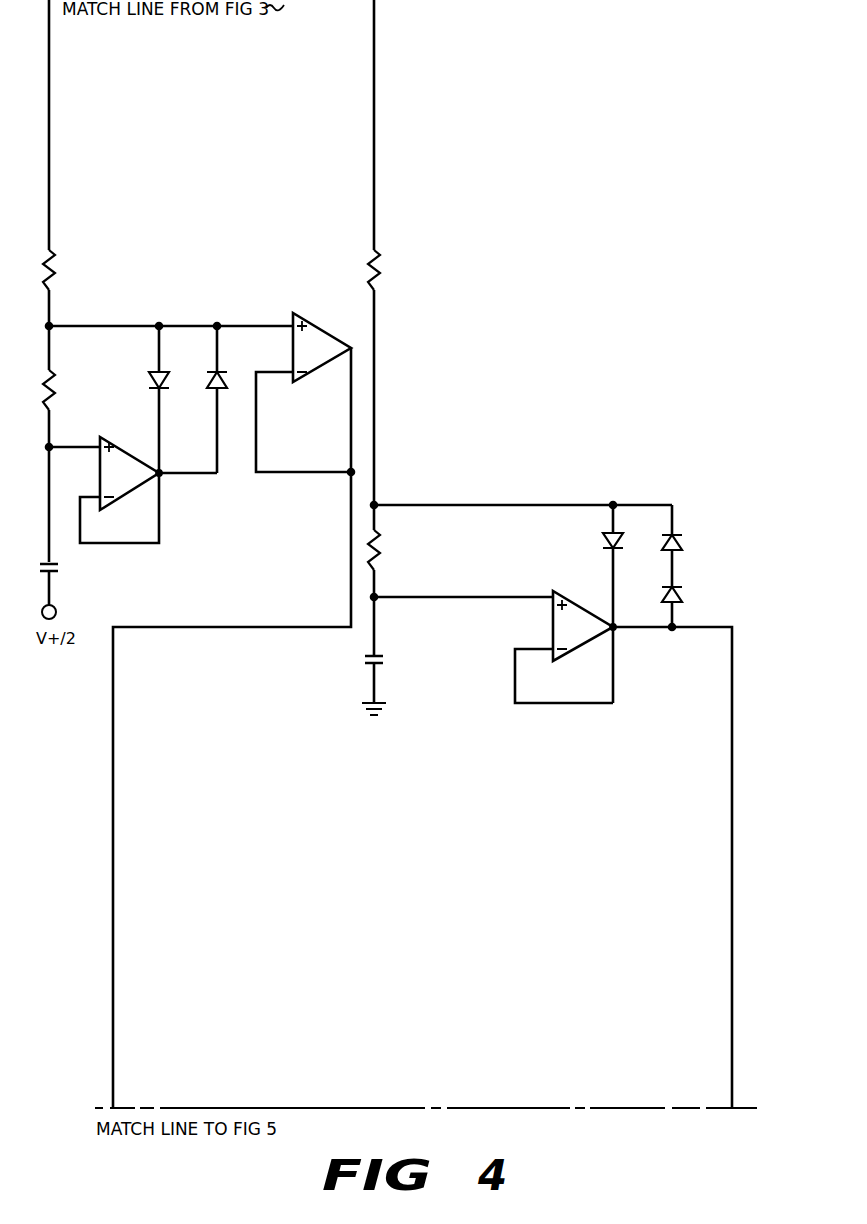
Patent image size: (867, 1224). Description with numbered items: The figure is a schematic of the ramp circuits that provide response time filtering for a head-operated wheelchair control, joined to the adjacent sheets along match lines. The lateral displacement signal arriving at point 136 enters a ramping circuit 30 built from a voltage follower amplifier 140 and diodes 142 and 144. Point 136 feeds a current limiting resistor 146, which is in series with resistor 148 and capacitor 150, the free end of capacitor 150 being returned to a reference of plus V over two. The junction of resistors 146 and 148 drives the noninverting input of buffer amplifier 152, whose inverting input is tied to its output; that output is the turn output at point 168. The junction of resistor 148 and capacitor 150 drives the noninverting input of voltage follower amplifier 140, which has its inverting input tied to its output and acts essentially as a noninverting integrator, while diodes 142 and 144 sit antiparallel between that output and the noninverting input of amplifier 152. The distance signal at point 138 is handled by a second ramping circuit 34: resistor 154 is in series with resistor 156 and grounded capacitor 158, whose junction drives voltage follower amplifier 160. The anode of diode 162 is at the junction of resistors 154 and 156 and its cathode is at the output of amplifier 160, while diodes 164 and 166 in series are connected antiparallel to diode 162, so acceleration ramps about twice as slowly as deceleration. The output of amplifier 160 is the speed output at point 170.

The ramping circuit 30 is at (267, 284).
The ramping circuit 34 is at (630, 492).
The point 136 is at (49, 197).
The point 138 is at (374, 145).
The voltage follower amplifier 140 is at (106, 500).
The diode 142 is at (221, 373).
The diode 144 is at (156, 372).
The resistor 146 is at (52, 278).
The resistor 148 is at (52, 398).
The capacitor 150 is at (60, 566).
The buffer amplifier 152 is at (309, 325).
The resistor 154 is at (377, 278).
The resistor 156 is at (377, 557).
The capacitor 158 is at (386, 662).
The voltage follower amplifier 160 is at (578, 603).
The diode 162 is at (601, 540).
The diode 164 is at (684, 546).
The diode 166 is at (684, 598).
The point 168 is at (355, 347).
The point 170 is at (616, 624).